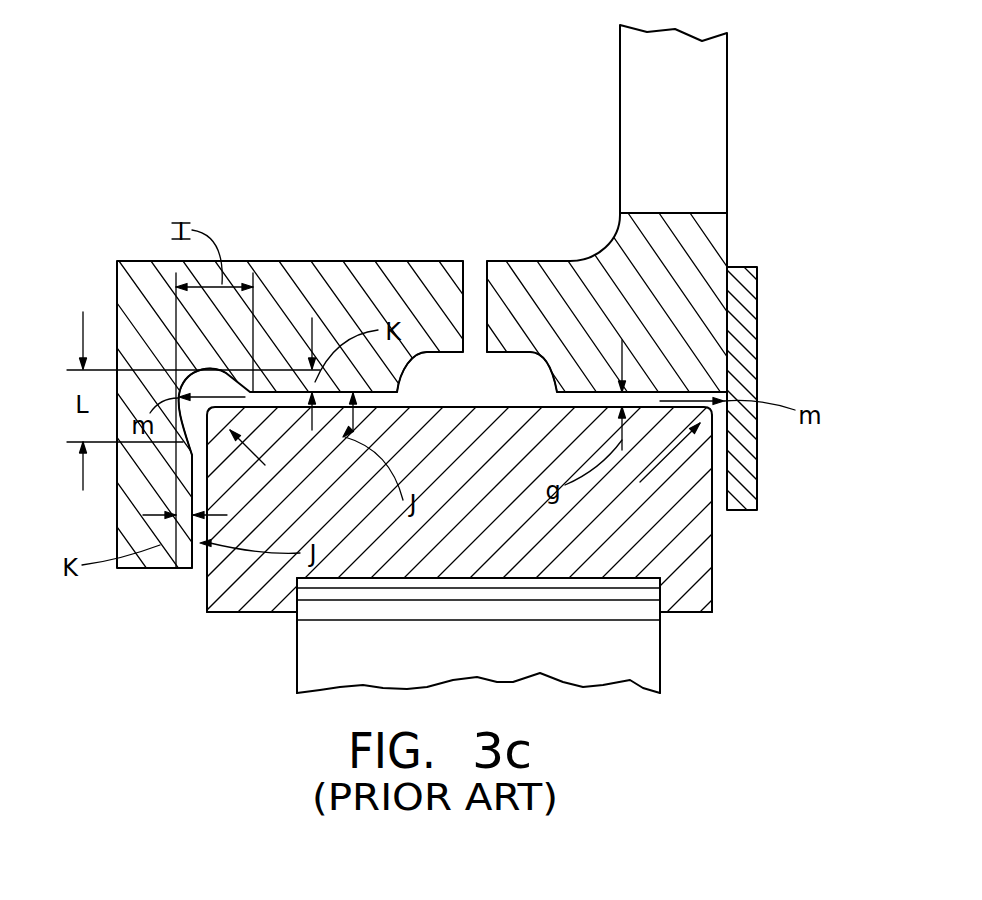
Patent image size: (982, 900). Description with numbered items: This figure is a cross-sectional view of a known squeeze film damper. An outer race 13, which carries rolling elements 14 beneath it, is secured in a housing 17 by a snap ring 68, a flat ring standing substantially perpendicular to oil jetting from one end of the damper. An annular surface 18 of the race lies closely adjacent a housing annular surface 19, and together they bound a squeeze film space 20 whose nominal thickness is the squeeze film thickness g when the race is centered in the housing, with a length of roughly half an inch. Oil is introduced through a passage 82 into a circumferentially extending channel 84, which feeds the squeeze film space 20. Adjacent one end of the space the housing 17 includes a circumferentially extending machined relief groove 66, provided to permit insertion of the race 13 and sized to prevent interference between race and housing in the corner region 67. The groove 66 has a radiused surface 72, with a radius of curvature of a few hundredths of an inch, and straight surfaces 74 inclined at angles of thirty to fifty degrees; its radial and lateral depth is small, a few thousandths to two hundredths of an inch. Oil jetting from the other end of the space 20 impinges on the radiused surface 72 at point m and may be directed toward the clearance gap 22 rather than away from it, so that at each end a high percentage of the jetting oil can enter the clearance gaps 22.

The outer race 13 is at (683, 607).
The rolling elements 14 is at (485, 654).
The housing 17 is at (345, 273).
The annular surface 18 is at (445, 406).
The housing annular surface 19 is at (590, 392).
The squeeze film space 20 is at (400, 398).
The clearance gap 22 is at (198, 567).
The machined relief groove 66 is at (226, 366).
The corner region 67 is at (465, 467).
The snap ring 68 is at (753, 467).
The radiused surface 72 is at (185, 365).
The straight surfaces 74 is at (310, 350).
The passage 82 is at (472, 262).
The circumferentially extending channel 84 is at (515, 357).